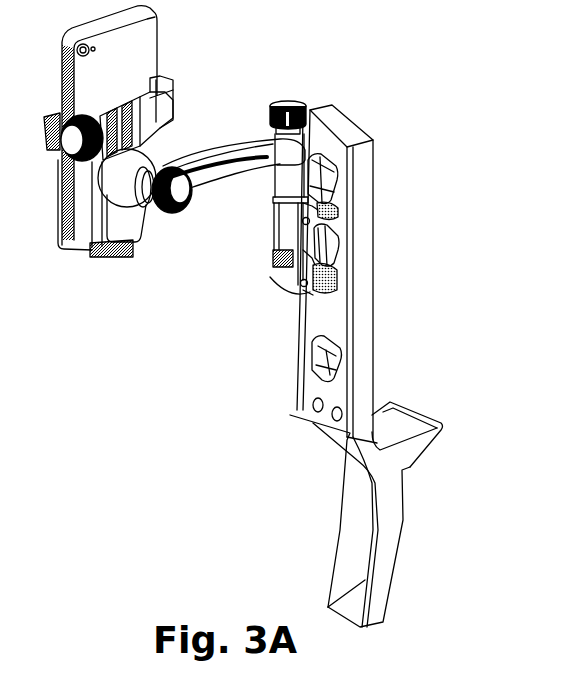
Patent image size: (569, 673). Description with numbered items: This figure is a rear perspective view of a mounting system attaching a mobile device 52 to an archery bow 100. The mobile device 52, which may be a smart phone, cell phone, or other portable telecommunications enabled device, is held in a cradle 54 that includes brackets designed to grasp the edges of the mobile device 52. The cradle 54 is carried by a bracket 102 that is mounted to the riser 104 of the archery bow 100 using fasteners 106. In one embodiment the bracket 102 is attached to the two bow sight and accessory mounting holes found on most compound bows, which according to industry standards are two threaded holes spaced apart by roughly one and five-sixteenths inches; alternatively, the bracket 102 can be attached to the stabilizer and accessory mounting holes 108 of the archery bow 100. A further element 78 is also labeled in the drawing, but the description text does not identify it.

The mobile device 52 is at (137, 50).
The cradle 54 is at (120, 224).
The bracket 102 is at (273, 200).
The riser 104 is at (360, 343).
The fasteners 106 is at (333, 212).
The stabilizer and accessory mounting holes 108 is at (332, 414).
The archery bow 100 is at (407, 369).
The leader 78 is at (527, 672).